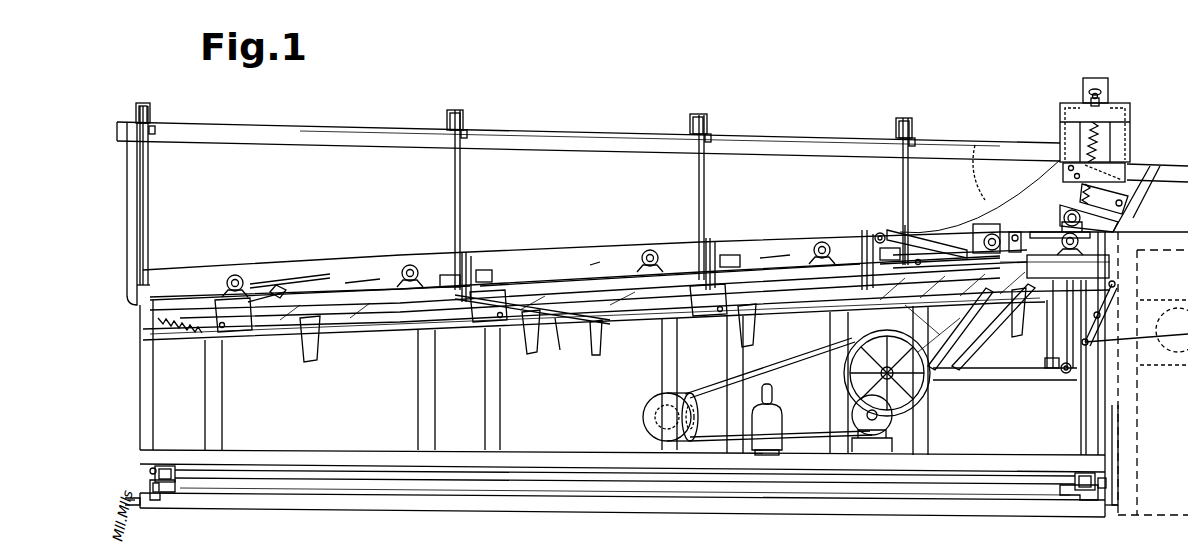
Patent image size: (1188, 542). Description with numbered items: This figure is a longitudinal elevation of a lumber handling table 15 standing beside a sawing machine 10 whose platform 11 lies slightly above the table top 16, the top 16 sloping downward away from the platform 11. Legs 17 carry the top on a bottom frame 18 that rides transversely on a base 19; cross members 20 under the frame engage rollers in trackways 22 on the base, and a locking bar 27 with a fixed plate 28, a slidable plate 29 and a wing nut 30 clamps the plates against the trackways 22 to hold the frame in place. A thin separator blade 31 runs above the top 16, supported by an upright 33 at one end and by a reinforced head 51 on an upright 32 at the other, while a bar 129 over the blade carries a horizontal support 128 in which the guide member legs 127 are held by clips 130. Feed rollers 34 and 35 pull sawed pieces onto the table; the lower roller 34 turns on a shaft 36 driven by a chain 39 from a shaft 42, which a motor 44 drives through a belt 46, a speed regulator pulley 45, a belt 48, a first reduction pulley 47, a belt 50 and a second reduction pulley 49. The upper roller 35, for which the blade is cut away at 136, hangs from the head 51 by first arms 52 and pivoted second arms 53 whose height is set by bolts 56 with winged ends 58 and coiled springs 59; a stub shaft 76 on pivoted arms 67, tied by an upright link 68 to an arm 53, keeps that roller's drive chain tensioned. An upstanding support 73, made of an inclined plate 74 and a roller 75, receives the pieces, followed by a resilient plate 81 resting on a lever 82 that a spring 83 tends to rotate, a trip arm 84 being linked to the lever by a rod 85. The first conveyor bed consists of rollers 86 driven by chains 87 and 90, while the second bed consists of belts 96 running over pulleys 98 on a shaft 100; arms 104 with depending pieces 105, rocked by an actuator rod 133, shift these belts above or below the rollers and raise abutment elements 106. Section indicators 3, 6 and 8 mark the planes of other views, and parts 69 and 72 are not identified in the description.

The platform 11 is at (165, 535).
The lumber handling table 15 is at (416, 393).
The top 16 is at (636, 300).
The legs 17 is at (153, 389).
The bottom frame 18 is at (560, 465).
The base 19 is at (455, 510).
The cross members 20 is at (177, 476).
The trackway 22 is at (175, 492).
The locking bar 27 is at (735, 484).
The plate 28 is at (1100, 486).
The plate 29 is at (158, 492).
The wing nut 30 is at (153, 468).
The separator blade 31 is at (585, 155).
The upright 32 is at (1108, 78).
The upright 33 is at (127, 252).
The lower feed roller 34 is at (1095, 238).
The upper feed roller 35 is at (1064, 210).
The shaft 36 is at (1110, 262).
The chain 39 is at (990, 325).
The shaft 42 is at (905, 380).
The motor 44 is at (888, 425).
The speed regulator pulley 45 is at (780, 410).
The belt 46 is at (810, 440).
The first reduction pulley 47 is at (645, 425).
The belt 48 is at (700, 440).
The second reduction pulley 49 is at (892, 400).
The belt 50 is at (768, 370).
The reinforced head 51 is at (1057, 125).
The first arm 52 is at (1140, 196).
The second arm 53 is at (1118, 226).
The bolts 56 is at (1110, 101).
The winged end 58 is at (1101, 92).
The coiled spring 59 is at (1100, 140).
The arms 67 is at (1002, 382).
The upright link 68 is at (1048, 370).
The arc guide 69 is at (1030, 238).
The rod 72 is at (1105, 355).
The upstanding support 73 is at (893, 235).
The upwardly inclined plate 74 is at (912, 240).
The roller 75 is at (880, 232).
The stub shaft 76 is at (1064, 374).
The upright resilient plate 81 is at (318, 275).
The upright lever 82 is at (278, 285).
The spring 83 is at (180, 333).
The trip arm 84 is at (978, 224).
The rod 85 is at (378, 322).
The rollers 86 is at (235, 274).
The chain 87 is at (940, 330).
The chain 90 is at (840, 320).
The conveyor belts 96 is at (470, 257).
The pulley 98 is at (480, 260).
The shaft 100 is at (540, 292).
The arm 104 is at (310, 330).
The depending piece 105 is at (228, 326).
The abutment element 106 is at (320, 284).
The vertically disposed leg 127 is at (148, 180).
The horizontal support 128 is at (155, 134).
The bar 129 is at (555, 140).
The clips 130 is at (143, 103).
The actuator rod 133 is at (565, 341).
The cut away 136 is at (1000, 200).
The section line 3 is at (660, 297).
The section line 6 is at (118, 455).
The section line 8 is at (958, 235).
The sawing machine 10 is at (324, 440).